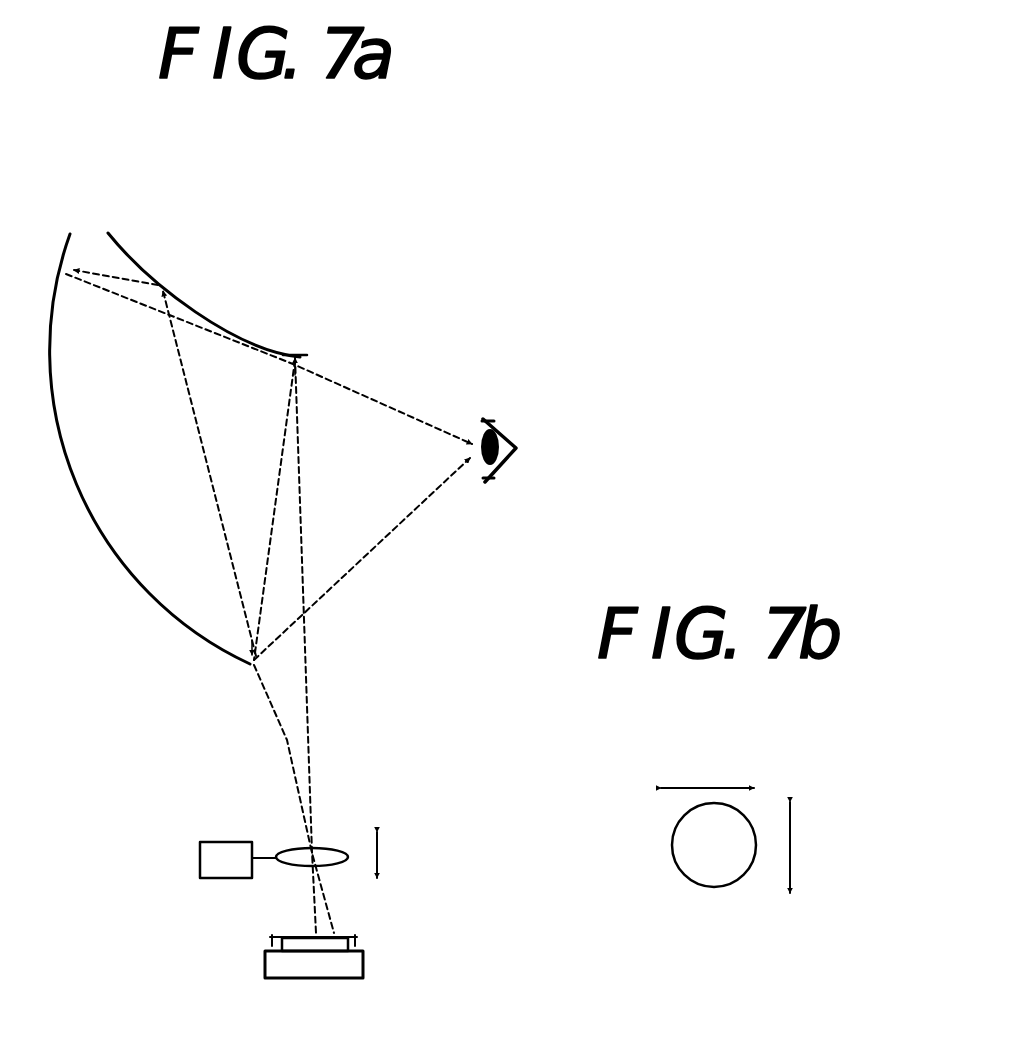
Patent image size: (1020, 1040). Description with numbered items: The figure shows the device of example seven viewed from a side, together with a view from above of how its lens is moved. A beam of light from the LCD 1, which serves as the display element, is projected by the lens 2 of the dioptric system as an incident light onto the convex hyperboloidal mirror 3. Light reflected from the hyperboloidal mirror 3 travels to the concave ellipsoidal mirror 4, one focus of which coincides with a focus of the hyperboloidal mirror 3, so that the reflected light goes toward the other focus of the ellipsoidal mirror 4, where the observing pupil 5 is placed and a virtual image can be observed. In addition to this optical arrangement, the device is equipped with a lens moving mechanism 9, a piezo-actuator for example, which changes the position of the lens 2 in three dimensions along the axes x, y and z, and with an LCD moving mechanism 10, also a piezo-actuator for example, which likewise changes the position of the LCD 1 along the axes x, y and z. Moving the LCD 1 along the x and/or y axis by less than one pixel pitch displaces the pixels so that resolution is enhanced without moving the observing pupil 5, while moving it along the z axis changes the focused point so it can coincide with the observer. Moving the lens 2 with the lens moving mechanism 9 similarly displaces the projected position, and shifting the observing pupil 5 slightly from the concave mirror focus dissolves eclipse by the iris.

In FIG. 7a, the LCD 1 is at (288, 937).
In FIG. 7a, the lens 2 is at (330, 846).
In FIG. 7b, the lens 2 is at (718, 887).
In FIG. 7a, the convex hyperboloidal mirror 3 is at (124, 251).
In FIG. 7a, the concave ellipsoidal mirror 4 is at (103, 539).
In FIG. 7a, the observing pupil 5 is at (481, 432).
In FIG. 7a, the lens moving mechanism 9 is at (213, 842).
In FIG. 7a, the LCD moving mechanism 10 is at (265, 968).
In FIG. 7b, the x axis x is at (710, 787).
In FIG. 7b, the y axis y is at (795, 850).
In FIG. 7a, the z axis z is at (387, 852).